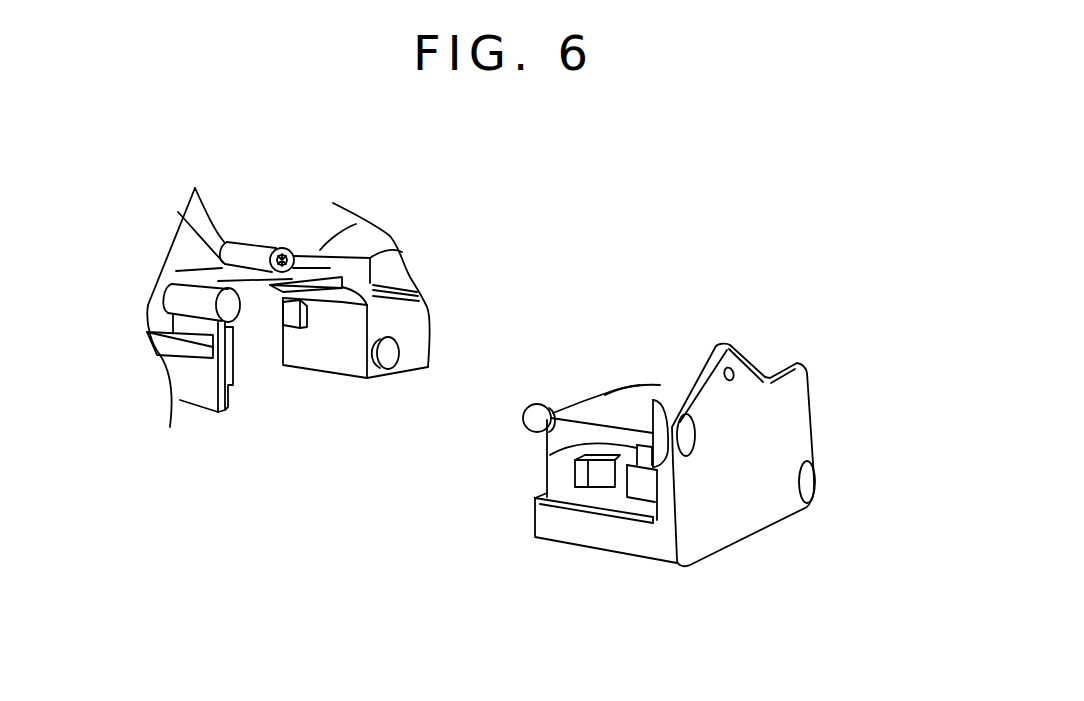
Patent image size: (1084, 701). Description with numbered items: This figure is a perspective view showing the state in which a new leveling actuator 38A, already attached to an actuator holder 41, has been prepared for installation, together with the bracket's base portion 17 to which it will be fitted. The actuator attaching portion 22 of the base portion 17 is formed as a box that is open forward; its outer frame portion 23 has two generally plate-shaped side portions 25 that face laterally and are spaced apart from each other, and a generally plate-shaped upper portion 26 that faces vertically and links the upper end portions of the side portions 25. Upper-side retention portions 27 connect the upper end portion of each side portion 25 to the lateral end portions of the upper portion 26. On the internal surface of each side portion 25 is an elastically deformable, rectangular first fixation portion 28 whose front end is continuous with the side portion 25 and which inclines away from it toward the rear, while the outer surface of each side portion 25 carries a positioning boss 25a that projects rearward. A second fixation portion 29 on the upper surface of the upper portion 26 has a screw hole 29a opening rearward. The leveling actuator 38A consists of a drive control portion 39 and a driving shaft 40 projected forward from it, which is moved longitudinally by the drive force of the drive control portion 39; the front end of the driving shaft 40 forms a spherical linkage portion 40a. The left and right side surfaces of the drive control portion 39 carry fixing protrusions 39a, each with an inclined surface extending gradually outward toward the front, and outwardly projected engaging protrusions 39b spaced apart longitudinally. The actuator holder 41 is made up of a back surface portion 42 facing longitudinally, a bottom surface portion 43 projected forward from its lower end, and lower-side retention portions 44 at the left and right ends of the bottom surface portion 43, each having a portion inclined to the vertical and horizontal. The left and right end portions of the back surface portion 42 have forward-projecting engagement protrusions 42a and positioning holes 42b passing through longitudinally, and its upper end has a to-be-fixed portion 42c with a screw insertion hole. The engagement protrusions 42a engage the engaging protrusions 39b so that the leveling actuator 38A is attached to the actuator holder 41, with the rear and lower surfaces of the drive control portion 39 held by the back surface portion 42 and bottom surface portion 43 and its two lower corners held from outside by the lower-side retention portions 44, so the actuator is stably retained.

The base portion 17 is at (180, 242).
The actuator attaching portion 22 is at (217, 262).
The outer frame portion 23 is at (302, 270).
The side portion 25 is at (236, 398).
The positioning boss 25a is at (240, 300).
The upper portion 26 is at (323, 268).
The upper-side retention portion 27 is at (333, 297).
The first fixation portion 28 is at (297, 322).
The second fixation portion 29 is at (225, 242).
The screw hole 29a is at (272, 257).
The leveling actuator 38A is at (633, 383).
The drive control portion 39 is at (656, 388).
The fixing protrusion 39a is at (598, 487).
The engaging protrusion 39b is at (566, 448).
The driving shaft 40 is at (546, 404).
The spherical linkage portion 40a is at (527, 411).
The actuator holder 41 is at (747, 527).
The back surface portion 42 is at (767, 513).
The engagement protrusion 42a is at (623, 478).
The positioning hole 42b is at (690, 436).
The to-be-fixed portion 42c is at (705, 348).
The bottom surface portion 43 is at (553, 542).
The lower-side retention portion 44 is at (537, 492).